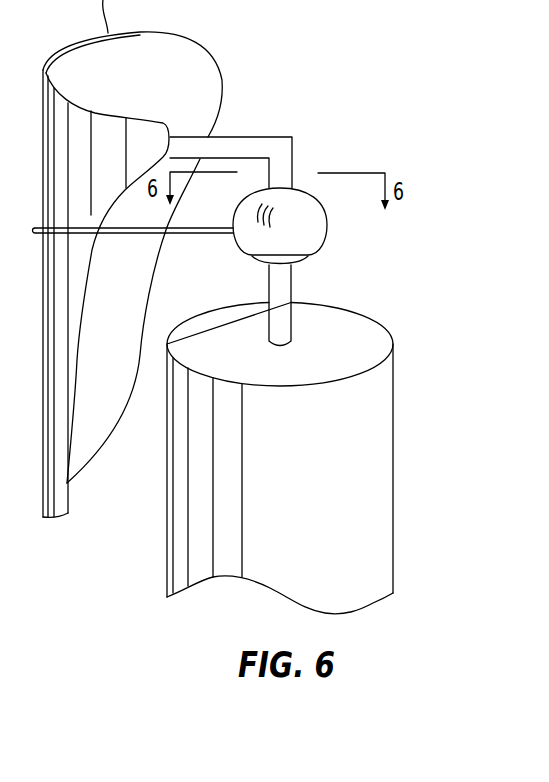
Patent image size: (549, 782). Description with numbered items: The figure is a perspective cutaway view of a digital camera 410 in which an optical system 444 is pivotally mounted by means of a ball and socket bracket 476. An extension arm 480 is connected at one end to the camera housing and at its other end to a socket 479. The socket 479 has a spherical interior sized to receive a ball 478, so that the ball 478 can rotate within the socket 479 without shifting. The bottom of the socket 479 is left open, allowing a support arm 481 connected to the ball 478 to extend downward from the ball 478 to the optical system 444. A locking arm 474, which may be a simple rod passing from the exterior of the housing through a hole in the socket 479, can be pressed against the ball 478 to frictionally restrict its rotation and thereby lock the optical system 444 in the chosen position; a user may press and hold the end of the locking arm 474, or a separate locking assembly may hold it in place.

The digital camera 410 is at (308, 58).
The optical system 444 is at (393, 445).
The locking arm 474 is at (213, 234).
The ball and socket bracket 476 is at (285, 212).
The ball 478 is at (306, 258).
The socket 479 is at (328, 232).
The extension arm 480 is at (250, 136).
The support arm 481 is at (292, 288).